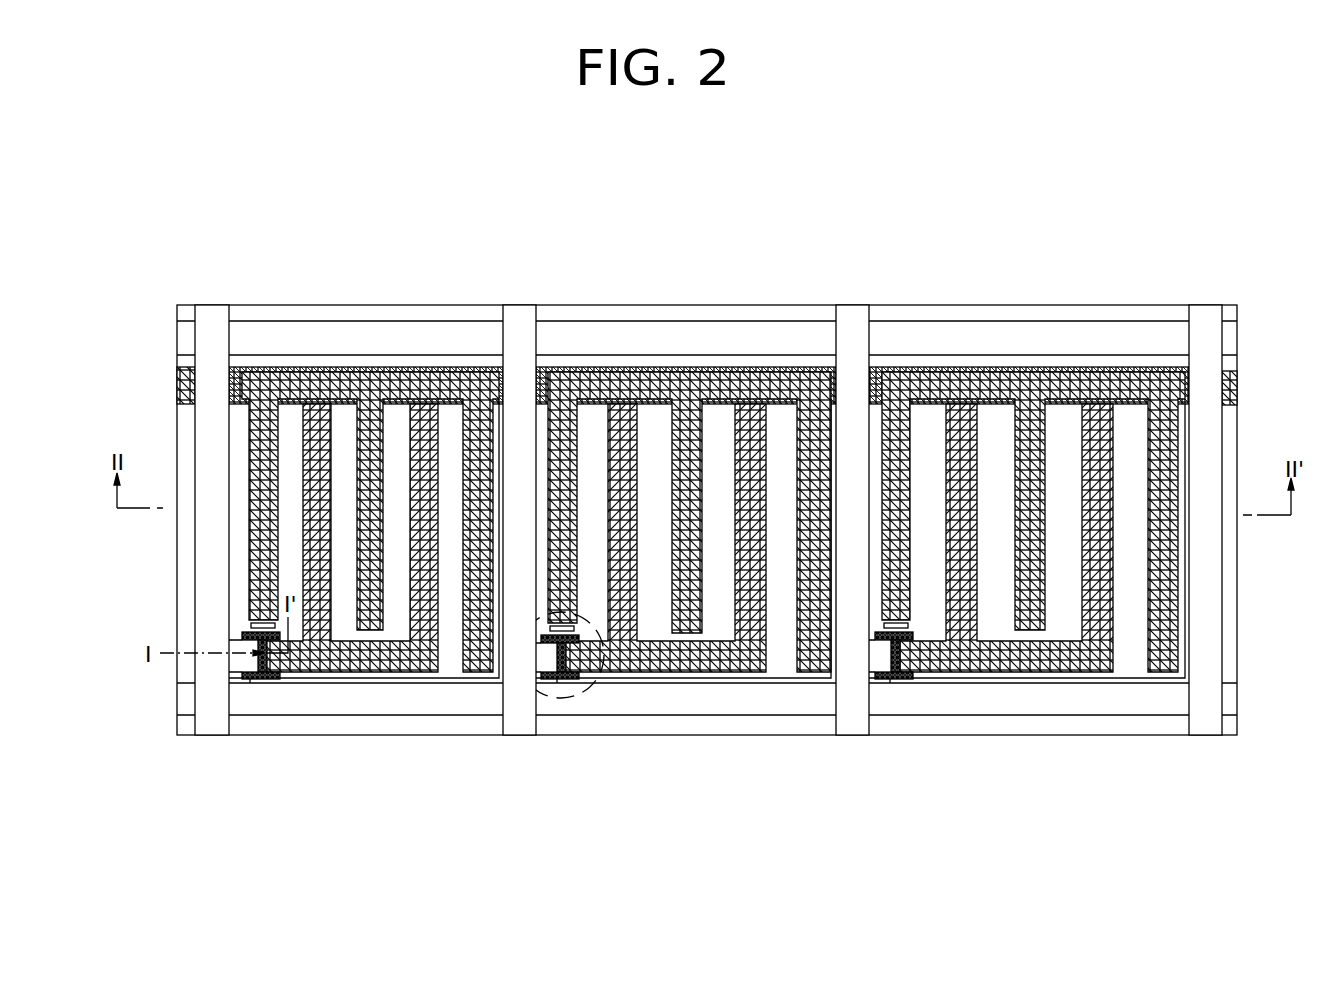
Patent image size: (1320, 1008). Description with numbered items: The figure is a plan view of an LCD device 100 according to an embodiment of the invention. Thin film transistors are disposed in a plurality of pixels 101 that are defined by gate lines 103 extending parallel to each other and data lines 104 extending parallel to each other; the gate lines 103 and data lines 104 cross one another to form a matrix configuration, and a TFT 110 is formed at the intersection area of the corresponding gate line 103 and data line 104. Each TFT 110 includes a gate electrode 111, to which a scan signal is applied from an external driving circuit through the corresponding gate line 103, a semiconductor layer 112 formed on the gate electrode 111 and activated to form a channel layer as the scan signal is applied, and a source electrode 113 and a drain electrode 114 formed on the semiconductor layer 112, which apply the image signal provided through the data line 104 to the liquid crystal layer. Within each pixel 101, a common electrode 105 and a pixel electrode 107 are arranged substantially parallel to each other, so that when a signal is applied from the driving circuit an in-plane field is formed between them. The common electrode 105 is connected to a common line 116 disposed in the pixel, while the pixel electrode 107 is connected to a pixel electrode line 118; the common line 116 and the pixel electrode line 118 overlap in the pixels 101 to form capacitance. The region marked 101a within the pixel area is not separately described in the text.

The thin film transistor array substrate 100 is at (676, 473).
The pixel 101 is at (709, 535).
The channel region 101a is at (453, 450).
The gate line 103 is at (1003, 712).
The data line 104 is at (1208, 586).
The common electrode 105 is at (566, 432).
The pixel electrode 107 is at (627, 432).
The thin film transistor 110 is at (515, 732).
The gate electrode 111 is at (563, 636).
The semiconductor layer 112 is at (558, 680).
The source electrode 113 is at (542, 655).
The drain electrode 114 is at (596, 677).
The common line 116 is at (188, 377).
The pixel electrode line 118 is at (703, 385).